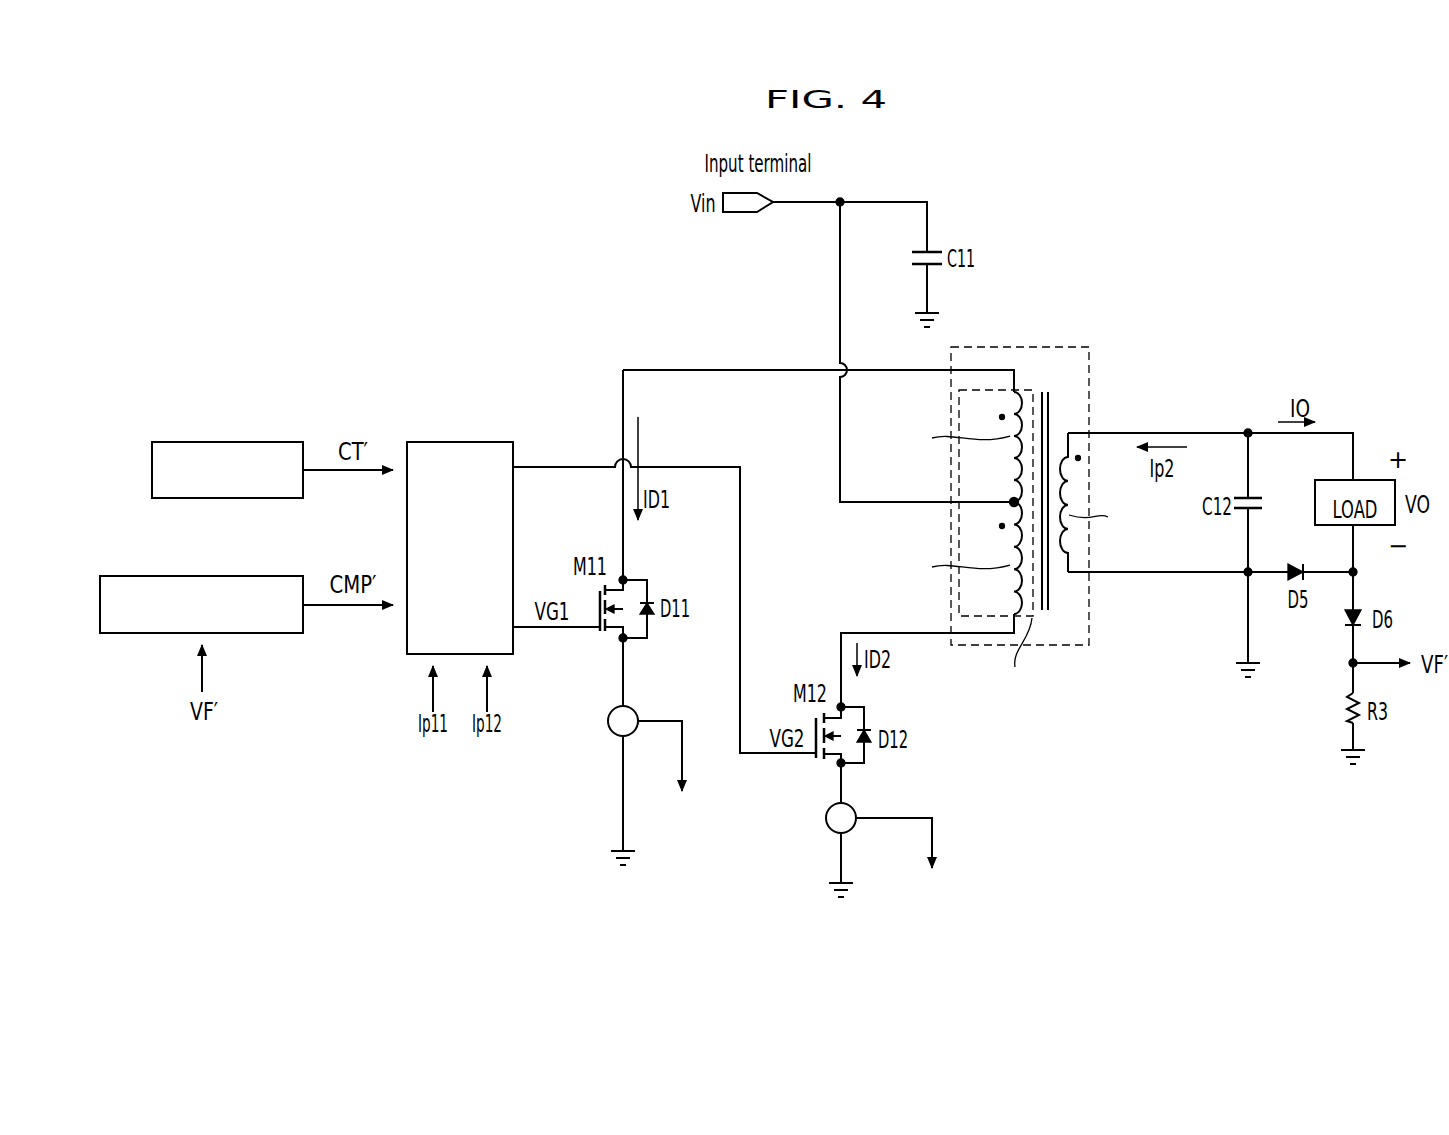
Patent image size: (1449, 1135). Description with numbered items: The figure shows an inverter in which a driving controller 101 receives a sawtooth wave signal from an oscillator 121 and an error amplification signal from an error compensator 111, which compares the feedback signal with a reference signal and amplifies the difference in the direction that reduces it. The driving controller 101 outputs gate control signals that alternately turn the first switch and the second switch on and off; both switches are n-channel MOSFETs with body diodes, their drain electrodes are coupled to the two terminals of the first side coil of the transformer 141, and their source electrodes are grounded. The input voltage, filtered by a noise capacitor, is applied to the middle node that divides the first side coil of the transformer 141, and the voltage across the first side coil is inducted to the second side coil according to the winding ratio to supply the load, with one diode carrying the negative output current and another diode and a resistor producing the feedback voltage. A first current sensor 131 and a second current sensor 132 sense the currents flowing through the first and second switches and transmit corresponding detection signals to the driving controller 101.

The oscillator 121 is at (249, 442).
The error compensator 111 is at (249, 576).
The driving controller 101 is at (476, 442).
The current sensor 131 is at (608, 722).
The current sensor 132 is at (826, 826).
The transformer 141 is at (1078, 647).